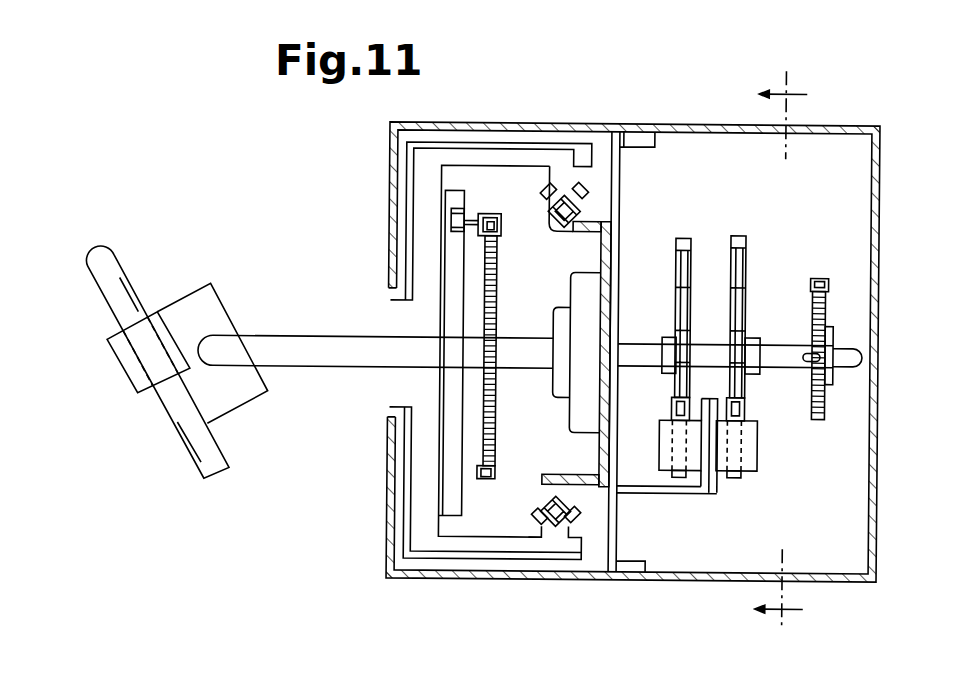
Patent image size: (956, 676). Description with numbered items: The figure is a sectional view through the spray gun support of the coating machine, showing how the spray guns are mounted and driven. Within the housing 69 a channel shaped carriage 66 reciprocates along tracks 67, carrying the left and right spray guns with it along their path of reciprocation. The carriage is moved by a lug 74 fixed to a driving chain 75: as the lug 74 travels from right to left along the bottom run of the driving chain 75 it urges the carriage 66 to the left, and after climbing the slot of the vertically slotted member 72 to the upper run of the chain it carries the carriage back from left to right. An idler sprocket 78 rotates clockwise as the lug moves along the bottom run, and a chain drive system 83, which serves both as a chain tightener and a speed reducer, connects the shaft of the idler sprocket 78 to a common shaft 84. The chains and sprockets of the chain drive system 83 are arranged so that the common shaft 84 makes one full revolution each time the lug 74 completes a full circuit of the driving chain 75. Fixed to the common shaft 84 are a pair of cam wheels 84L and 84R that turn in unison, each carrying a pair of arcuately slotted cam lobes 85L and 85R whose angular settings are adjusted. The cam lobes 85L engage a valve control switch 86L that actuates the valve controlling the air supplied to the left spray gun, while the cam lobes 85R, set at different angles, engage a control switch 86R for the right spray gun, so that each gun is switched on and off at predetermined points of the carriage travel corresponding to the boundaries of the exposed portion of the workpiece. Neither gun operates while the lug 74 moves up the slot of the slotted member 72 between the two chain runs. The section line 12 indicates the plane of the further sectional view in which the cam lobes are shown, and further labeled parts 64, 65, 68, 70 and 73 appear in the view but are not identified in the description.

The section line 12- 12 is at (800, 349).
The handle 64 is at (160, 300).
The shaft 65 is at (343, 370).
The channel shaped carriage 66 is at (415, 215).
The tracks 67 is at (578, 208).
The bracket 68 is at (608, 266).
The housing 69 is at (543, 125).
The gear assembly 70 is at (622, 107).
The vertically slotted member 72 is at (440, 487).
The knob 73 is at (472, 225).
The lug 74 is at (500, 202).
The driving chain 75 is at (498, 235).
The idler sprocket 78 is at (495, 417).
The chain drive system 83 is at (822, 275).
The common shaft 84 is at (792, 333).
The cam wheel 84L is at (740, 297).
The cam wheel 84R is at (680, 323).
The arcuately slotted cam lobes 85L is at (745, 236).
The arcuately slotted cam lobes 85R is at (684, 238).
The valve control switch 86L is at (748, 452).
The control switch 86R is at (665, 452).